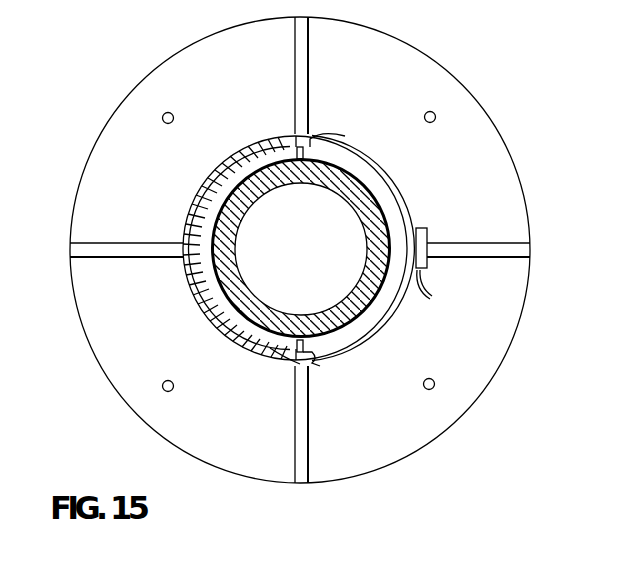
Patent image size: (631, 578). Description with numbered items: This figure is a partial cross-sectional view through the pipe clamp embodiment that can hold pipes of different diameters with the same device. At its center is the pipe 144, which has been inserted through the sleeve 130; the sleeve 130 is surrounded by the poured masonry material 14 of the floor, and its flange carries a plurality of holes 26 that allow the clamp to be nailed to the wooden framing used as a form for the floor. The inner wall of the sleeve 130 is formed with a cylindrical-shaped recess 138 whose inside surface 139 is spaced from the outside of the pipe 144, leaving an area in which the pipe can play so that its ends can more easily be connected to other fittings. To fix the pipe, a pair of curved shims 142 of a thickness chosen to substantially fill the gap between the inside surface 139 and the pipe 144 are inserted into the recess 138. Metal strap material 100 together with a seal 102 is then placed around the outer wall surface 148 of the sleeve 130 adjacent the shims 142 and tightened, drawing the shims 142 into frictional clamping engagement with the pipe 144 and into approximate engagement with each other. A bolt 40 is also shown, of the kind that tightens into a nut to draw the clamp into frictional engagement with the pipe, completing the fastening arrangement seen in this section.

The masonry material 14 is at (108, 251).
The holes 26 is at (172, 113).
The bolt 40 is at (312, 358).
The metal strap material 100 is at (392, 325).
The seal 102 is at (428, 233).
The sleeve 130 is at (276, 137).
The recess 138 is at (333, 143).
The inside surface 139 is at (270, 353).
The curved shims 142 is at (385, 200).
The pipe 144 is at (237, 347).
The outer wall surface 148 is at (202, 190).